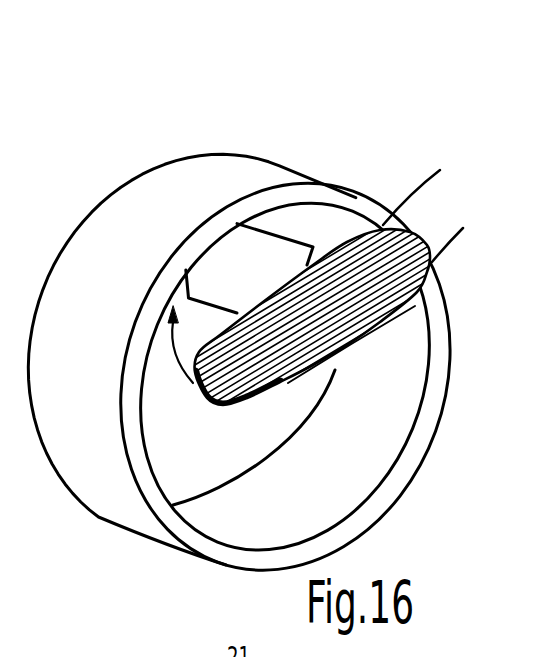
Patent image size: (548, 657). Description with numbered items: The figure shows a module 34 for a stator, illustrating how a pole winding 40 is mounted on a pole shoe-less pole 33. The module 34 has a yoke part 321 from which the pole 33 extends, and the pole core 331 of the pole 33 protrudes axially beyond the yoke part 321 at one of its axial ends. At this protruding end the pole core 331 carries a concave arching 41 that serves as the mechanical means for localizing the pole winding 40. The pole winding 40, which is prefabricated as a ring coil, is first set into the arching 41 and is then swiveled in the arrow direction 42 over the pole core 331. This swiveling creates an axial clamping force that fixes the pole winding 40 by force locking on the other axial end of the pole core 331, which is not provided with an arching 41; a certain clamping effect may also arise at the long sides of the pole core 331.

The module 34 is at (240, 143).
The yoke part 321 is at (87, 447).
The pole 33 is at (227, 267).
The pole core 331 is at (297, 228).
The pole winding 40 is at (329, 343).
The concave arching 41 is at (346, 235).
The arrow direction 42 is at (172, 341).